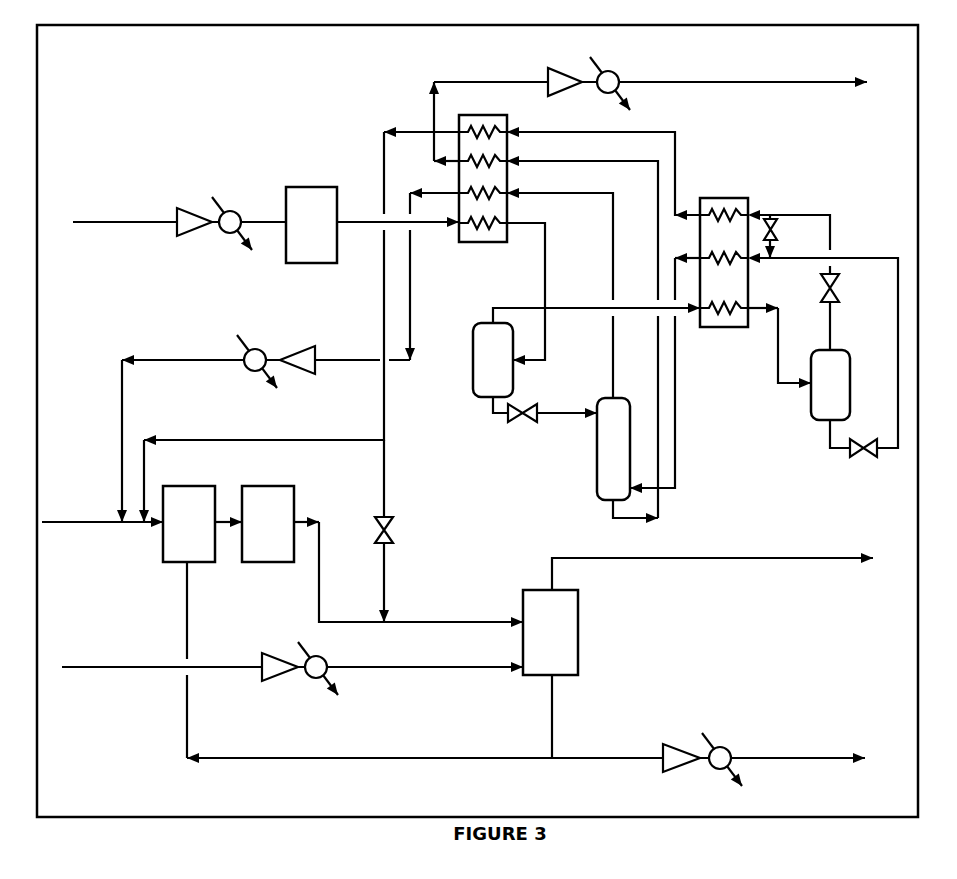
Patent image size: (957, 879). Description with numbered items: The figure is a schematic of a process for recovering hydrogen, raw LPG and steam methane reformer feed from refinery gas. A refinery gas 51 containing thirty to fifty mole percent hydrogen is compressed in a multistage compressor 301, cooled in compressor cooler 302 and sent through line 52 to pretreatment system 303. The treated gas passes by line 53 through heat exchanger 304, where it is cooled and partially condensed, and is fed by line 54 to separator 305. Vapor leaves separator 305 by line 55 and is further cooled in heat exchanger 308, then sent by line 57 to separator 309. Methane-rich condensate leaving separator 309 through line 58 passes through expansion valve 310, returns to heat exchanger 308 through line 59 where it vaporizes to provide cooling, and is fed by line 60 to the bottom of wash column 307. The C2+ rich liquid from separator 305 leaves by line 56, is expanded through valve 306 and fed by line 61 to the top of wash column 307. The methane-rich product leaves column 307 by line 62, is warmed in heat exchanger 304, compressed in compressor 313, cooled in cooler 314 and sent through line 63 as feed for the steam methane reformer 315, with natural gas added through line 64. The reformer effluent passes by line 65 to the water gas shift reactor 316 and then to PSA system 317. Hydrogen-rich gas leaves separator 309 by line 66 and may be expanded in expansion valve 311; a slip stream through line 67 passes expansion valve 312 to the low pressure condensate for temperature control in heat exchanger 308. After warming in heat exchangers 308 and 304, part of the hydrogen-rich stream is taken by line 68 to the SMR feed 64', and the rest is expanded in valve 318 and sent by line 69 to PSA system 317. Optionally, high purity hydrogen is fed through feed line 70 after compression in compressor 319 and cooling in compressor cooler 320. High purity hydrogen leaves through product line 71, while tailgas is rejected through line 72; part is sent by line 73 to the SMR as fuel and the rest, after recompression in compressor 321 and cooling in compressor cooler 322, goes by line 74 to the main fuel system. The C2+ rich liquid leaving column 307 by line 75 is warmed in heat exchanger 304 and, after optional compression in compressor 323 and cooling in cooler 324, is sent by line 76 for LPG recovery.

The refinery gas 51 is at (110, 228).
The line 52 is at (275, 216).
The line 53 is at (343, 219).
The line 54 is at (545, 240).
The line 55 is at (515, 306).
The line 56 is at (491, 410).
The line 57 is at (781, 348).
The line 58 is at (829, 452).
The line 59 is at (896, 355).
The line 60 is at (676, 446).
The line 61 is at (553, 411).
The line 62 is at (616, 345).
The line 63 is at (118, 400).
The line 64 is at (102, 526).
The SMR feed 64' is at (141, 543).
The line 65 is at (219, 519).
The line 66 is at (832, 318).
The line 67 is at (780, 255).
The line 68 is at (282, 444).
The line 69 is at (380, 578).
The feed line 70 is at (96, 670).
The product line 71 is at (700, 563).
The line 72 is at (555, 695).
The line 73 is at (310, 762).
The line 74 is at (782, 762).
The line 75 is at (618, 522).
The line 76 is at (655, 81).
The multistage compressor 301 is at (182, 238).
The compressor cooler 302 is at (233, 236).
The pretreatment system 303 is at (311, 225).
The heat exchanger 304 is at (483, 178).
The separator 305 is at (493, 360).
The valve 306 is at (526, 422).
The wash column 307 is at (613, 449).
The heat exchanger 308 is at (724, 262).
The separator 309 is at (830, 385).
The expansion valve 310 is at (870, 458).
The expansion valve 311 is at (836, 300).
The expansion valve 312 is at (780, 220).
The compressor 313 is at (301, 377).
The cooler 314 is at (254, 374).
The steam methane reformer 315 is at (189, 524).
The water gas shift reactor 316 is at (268, 524).
The PSA system 317 is at (550, 632).
The valve 318 is at (395, 531).
The compressor 319 is at (273, 683).
The compressor cooler 320 is at (316, 681).
The compressor 321 is at (676, 774).
The compressor cooler 322 is at (719, 771).
The compressor 323 is at (564, 96).
The cooler 324 is at (607, 94).